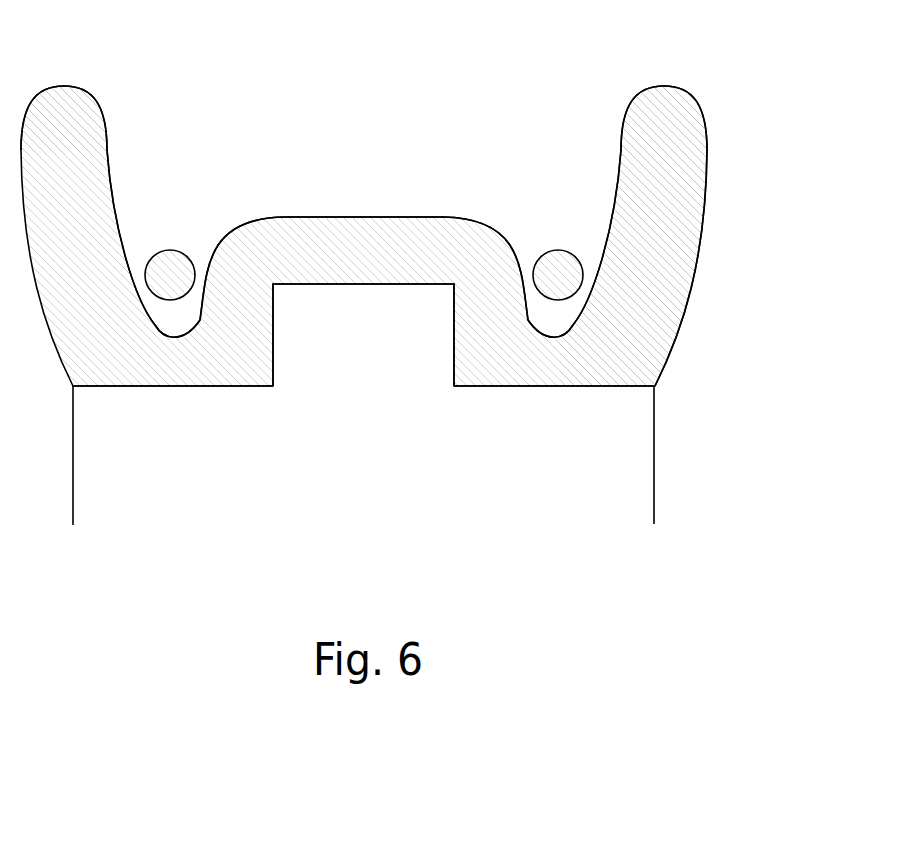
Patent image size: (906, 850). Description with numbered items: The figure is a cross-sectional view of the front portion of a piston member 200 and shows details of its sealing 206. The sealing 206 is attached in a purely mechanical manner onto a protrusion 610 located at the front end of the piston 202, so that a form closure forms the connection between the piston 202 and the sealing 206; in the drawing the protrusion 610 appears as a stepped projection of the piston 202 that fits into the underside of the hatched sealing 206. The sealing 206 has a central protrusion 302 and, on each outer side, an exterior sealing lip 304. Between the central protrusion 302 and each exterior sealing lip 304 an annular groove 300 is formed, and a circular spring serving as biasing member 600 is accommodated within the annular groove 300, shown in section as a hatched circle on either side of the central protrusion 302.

The piston member 200 is at (718, 165).
The piston 202 is at (620, 458).
The sealing 206 is at (652, 298).
The annular groove 300 is at (135, 252).
The central protrusion 302 is at (364, 217).
The exterior sealing lip 304 is at (69, 107).
The biasing member 600 is at (165, 272).
The protrusion 610 is at (338, 362).